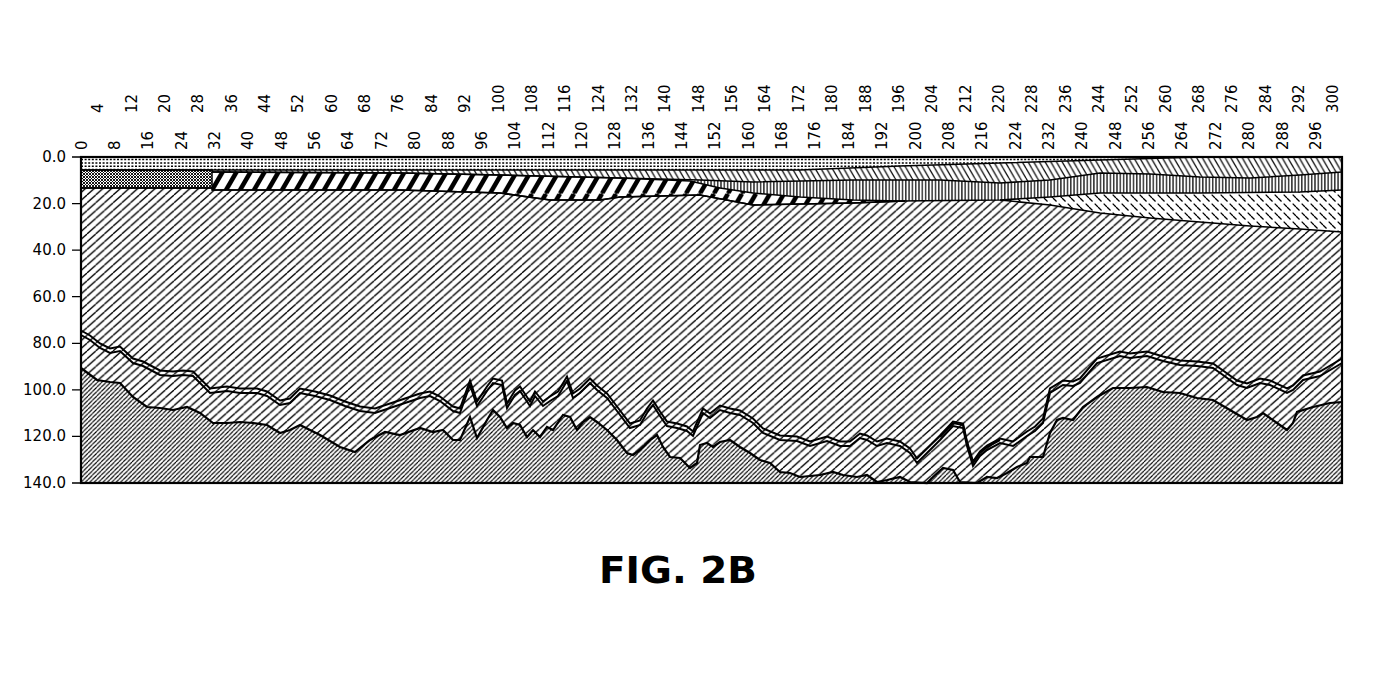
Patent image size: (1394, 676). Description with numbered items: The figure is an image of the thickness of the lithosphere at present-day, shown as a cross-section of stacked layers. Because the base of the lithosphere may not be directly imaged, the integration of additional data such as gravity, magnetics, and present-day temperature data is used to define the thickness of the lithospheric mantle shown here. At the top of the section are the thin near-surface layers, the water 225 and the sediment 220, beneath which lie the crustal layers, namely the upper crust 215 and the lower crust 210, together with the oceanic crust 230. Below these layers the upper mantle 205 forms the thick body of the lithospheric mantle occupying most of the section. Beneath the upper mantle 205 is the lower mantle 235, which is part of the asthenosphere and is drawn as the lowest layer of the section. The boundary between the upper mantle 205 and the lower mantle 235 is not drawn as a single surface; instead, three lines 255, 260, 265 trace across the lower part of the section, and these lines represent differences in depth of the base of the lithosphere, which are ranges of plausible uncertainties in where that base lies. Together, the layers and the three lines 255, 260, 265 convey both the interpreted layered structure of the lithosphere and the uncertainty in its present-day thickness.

The upper mantle 205 is at (1344, 300).
The lower crust 210 is at (1330, 212).
The upper crust 215 is at (901, 189).
The sediment 220 is at (1001, 178).
The water 225 is at (670, 167).
The oceanic crust 230 is at (140, 186).
The lower mantle 235 is at (1223, 442).
The line representing depth of base of lithosphere 255 is at (833, 486).
The line representing depth of base of lithosphere 260 is at (880, 444).
The line representing depth of base of lithosphere 265 is at (965, 421).